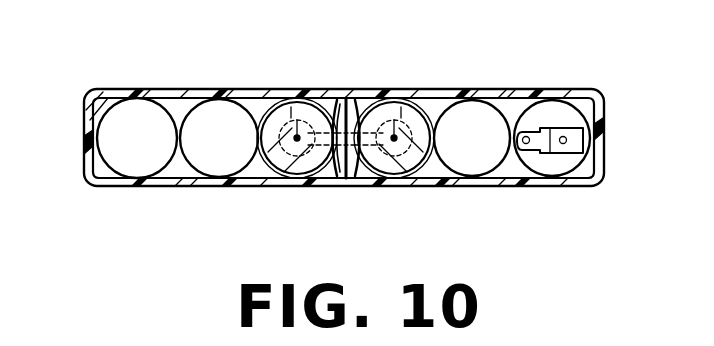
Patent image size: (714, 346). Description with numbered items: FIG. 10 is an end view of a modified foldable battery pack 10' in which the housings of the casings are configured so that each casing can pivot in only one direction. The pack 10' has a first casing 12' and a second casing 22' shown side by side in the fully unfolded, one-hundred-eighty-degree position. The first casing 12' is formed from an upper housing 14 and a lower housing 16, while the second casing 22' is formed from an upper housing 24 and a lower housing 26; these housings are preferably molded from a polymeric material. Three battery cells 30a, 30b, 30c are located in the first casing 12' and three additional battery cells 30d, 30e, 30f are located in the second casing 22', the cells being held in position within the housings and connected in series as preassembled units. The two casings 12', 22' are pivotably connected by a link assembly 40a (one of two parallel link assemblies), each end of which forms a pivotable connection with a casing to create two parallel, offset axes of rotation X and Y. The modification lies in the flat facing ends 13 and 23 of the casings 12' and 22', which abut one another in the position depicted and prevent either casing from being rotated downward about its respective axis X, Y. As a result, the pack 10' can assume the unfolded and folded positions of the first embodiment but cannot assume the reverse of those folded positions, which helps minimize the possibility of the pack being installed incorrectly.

The foldable battery pack 10' is at (515, 26).
The first casing 12' is at (354, 163).
The flat facing end 13 is at (352, 184).
The upper housing 14 is at (605, 172).
The lower housing 16 is at (606, 100).
The second casing 22' is at (323, 203).
The flat facing end 23 is at (337, 184).
The upper housing 24 is at (86, 172).
The lower housing 26 is at (95, 95).
The battery cell 30a is at (550, 168).
The battery cell 30b is at (475, 172).
The battery cell 30c is at (393, 172).
The battery cell 30d is at (302, 170).
The battery cell 30e is at (215, 170).
The battery cell 30f is at (133, 170).
The link assembly 40a is at (347, 92).
The axis of rotation X is at (401, 107).
The axis of rotation Y is at (291, 107).